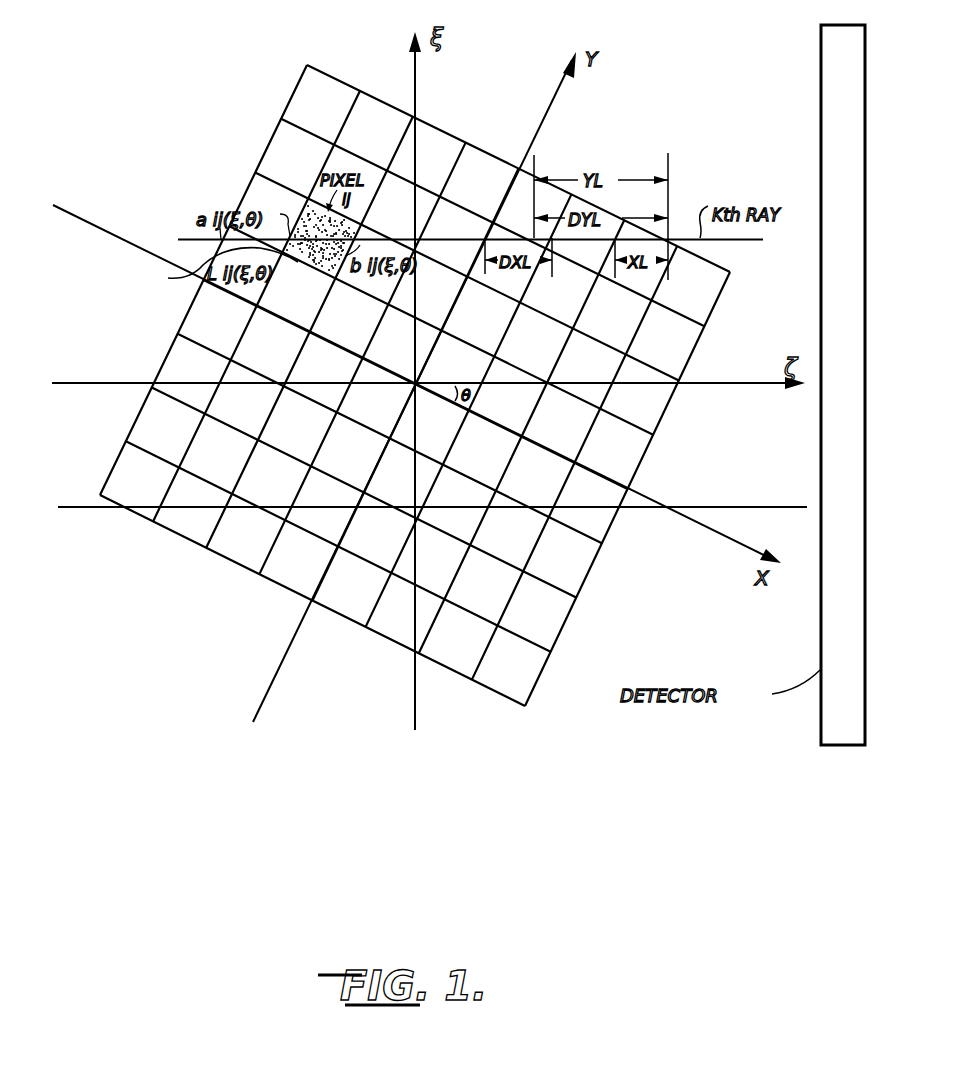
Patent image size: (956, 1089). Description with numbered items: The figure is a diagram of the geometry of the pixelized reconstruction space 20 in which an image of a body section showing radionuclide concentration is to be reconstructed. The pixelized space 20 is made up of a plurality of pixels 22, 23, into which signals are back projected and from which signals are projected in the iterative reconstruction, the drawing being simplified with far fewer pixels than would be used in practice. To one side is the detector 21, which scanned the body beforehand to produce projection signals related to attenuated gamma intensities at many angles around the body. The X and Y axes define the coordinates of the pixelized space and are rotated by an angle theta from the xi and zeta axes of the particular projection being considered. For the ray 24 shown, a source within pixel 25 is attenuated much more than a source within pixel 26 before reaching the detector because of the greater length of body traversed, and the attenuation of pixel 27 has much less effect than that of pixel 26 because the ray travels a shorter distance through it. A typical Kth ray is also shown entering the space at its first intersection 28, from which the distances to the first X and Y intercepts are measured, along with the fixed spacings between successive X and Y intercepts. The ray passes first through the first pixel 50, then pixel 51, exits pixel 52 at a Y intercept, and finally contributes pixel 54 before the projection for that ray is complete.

The pixelized reconstruction space 20 is at (210, 600).
The detector 21 is at (840, 733).
The pixel 22 is at (461, 659).
The pixel 23 is at (516, 685).
The ray 24 is at (780, 476).
The pixel 25 is at (330, 525).
The pixel 26 is at (597, 522).
The pixel 27 is at (428, 474).
The first intersection 28 is at (672, 240).
The first pixel 50 is at (648, 277).
The pixel 51 is at (618, 228).
The pixel 52 is at (518, 214).
The pixel 54 is at (214, 273).